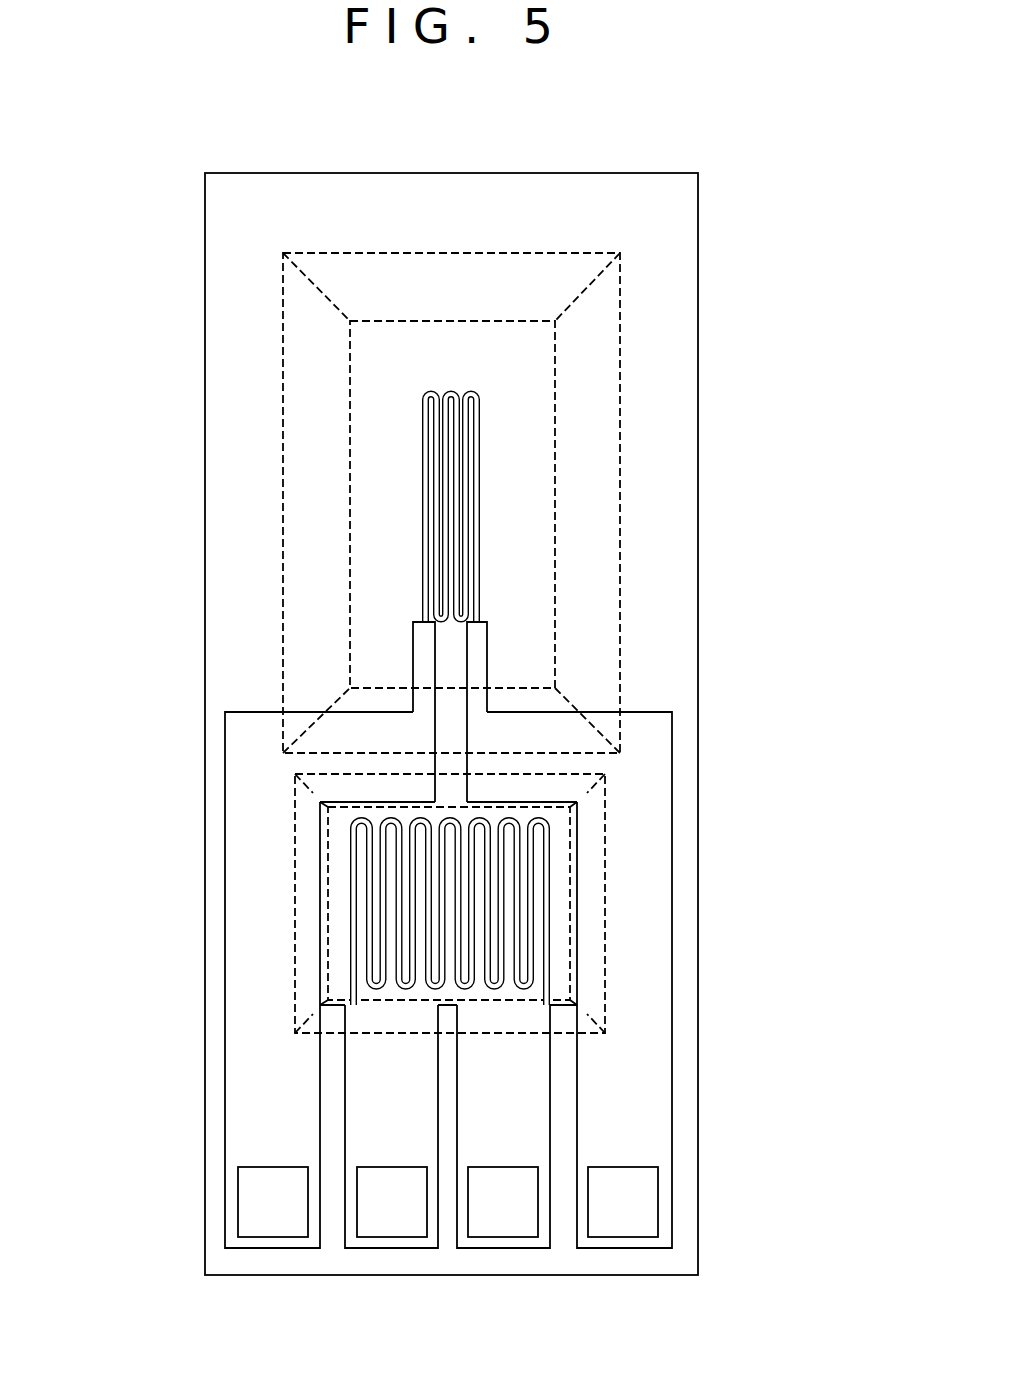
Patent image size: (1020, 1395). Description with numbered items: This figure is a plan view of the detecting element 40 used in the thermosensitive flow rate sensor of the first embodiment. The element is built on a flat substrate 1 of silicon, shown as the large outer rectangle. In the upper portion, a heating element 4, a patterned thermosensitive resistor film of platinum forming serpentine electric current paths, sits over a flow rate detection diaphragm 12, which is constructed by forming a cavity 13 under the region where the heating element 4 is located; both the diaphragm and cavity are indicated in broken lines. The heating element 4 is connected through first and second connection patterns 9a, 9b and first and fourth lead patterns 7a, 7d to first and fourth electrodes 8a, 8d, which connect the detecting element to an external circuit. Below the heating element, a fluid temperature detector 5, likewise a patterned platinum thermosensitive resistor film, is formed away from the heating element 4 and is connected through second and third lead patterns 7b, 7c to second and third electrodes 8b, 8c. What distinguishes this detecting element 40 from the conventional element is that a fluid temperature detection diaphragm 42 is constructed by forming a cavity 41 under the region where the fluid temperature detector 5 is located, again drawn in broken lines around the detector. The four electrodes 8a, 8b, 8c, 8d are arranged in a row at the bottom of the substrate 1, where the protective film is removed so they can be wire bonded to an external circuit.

The detecting element 40 is at (401, 724).
The flat substrate 1 is at (207, 513).
The flow rate detection diaphragm 12 is at (510, 378).
The cavity 13 is at (573, 430).
The heating element 4 is at (481, 473).
The first connection pattern 9a is at (423, 653).
The second connection pattern 9b is at (481, 660).
The cavity 41 is at (590, 803).
The fluid temperature detection diaphragm 42 is at (558, 827).
The fluid temperature detector 5 is at (543, 888).
The first lead pattern 7a is at (247, 1093).
The second lead pattern 7b is at (365, 1073).
The third lead pattern 7c is at (532, 1063).
The fourth lead pattern 7d is at (652, 1108).
The first electrode 8a is at (268, 1230).
The second electrode 8b is at (388, 1230).
The third electrode 8c is at (503, 1230).
The fourth electrode 8d is at (622, 1230).